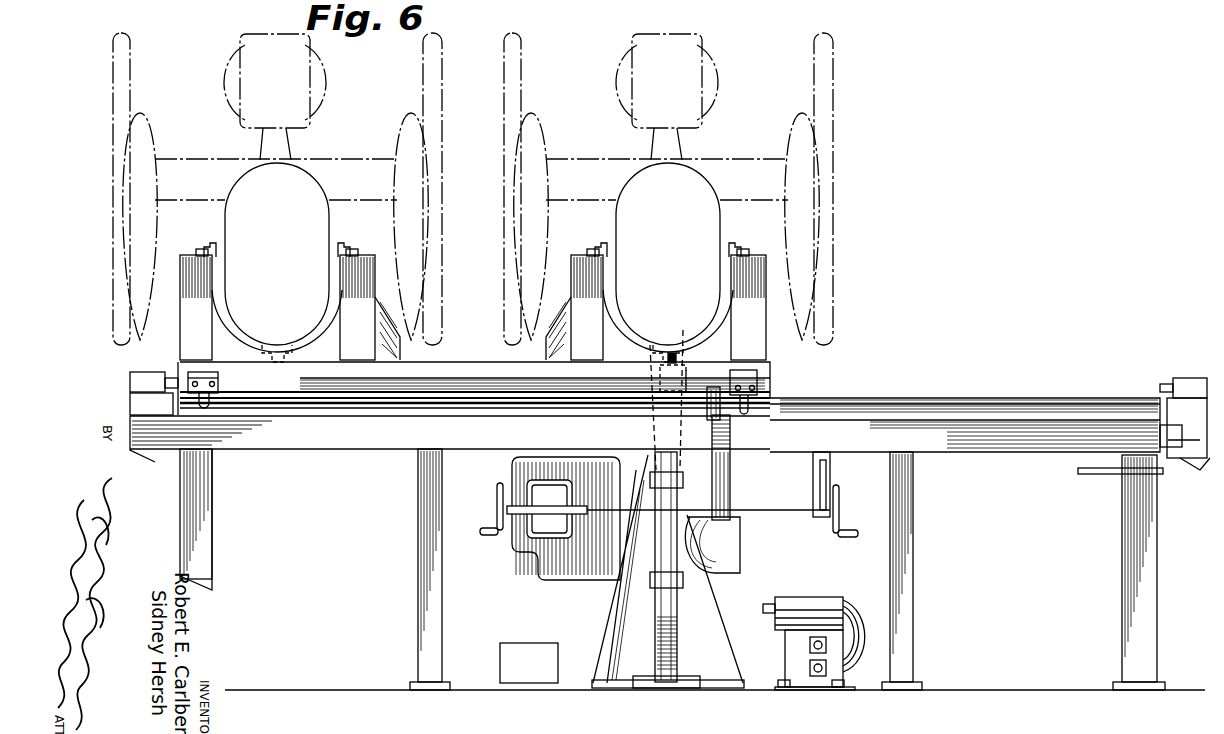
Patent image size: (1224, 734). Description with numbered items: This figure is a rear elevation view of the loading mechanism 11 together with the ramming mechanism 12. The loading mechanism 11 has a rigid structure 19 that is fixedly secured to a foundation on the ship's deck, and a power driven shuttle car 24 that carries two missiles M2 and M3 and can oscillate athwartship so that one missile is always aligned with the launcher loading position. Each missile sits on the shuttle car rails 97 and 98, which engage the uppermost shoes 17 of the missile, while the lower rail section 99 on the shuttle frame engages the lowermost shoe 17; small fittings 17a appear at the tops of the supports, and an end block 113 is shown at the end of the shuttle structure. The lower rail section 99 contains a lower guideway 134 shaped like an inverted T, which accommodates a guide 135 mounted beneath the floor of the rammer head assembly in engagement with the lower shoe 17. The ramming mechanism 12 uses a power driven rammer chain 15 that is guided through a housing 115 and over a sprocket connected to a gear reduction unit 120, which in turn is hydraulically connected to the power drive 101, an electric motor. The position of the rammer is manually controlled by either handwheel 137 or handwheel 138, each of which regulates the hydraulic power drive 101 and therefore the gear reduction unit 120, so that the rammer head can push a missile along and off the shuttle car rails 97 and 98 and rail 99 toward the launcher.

The loading mechanism 11 is at (1007, 384).
The ramming mechanism 12 is at (710, 611).
The rammer chain 15 is at (673, 352).
The launching shoe 17 is at (292, 358).
The motor mount fitting 17a is at (210, 246).
The rigid structure 19 is at (382, 443).
The shuttle car 24 is at (276, 383).
The shuttle car rail 97 is at (203, 251).
The shuttle car rail 98 is at (350, 251).
The lower rail section 99 is at (660, 374).
The power drive 101 is at (805, 597).
The end block 113 is at (135, 378).
The housing 115 is at (677, 550).
The gear reduction unit 120 is at (570, 565).
The lower guideway 134 is at (686, 382).
The guide 135 is at (654, 400).
The handwheel 137 is at (840, 496).
The handwheel 138 is at (497, 494).
The missile M2 is at (677, 223).
The missile M3 is at (283, 223).